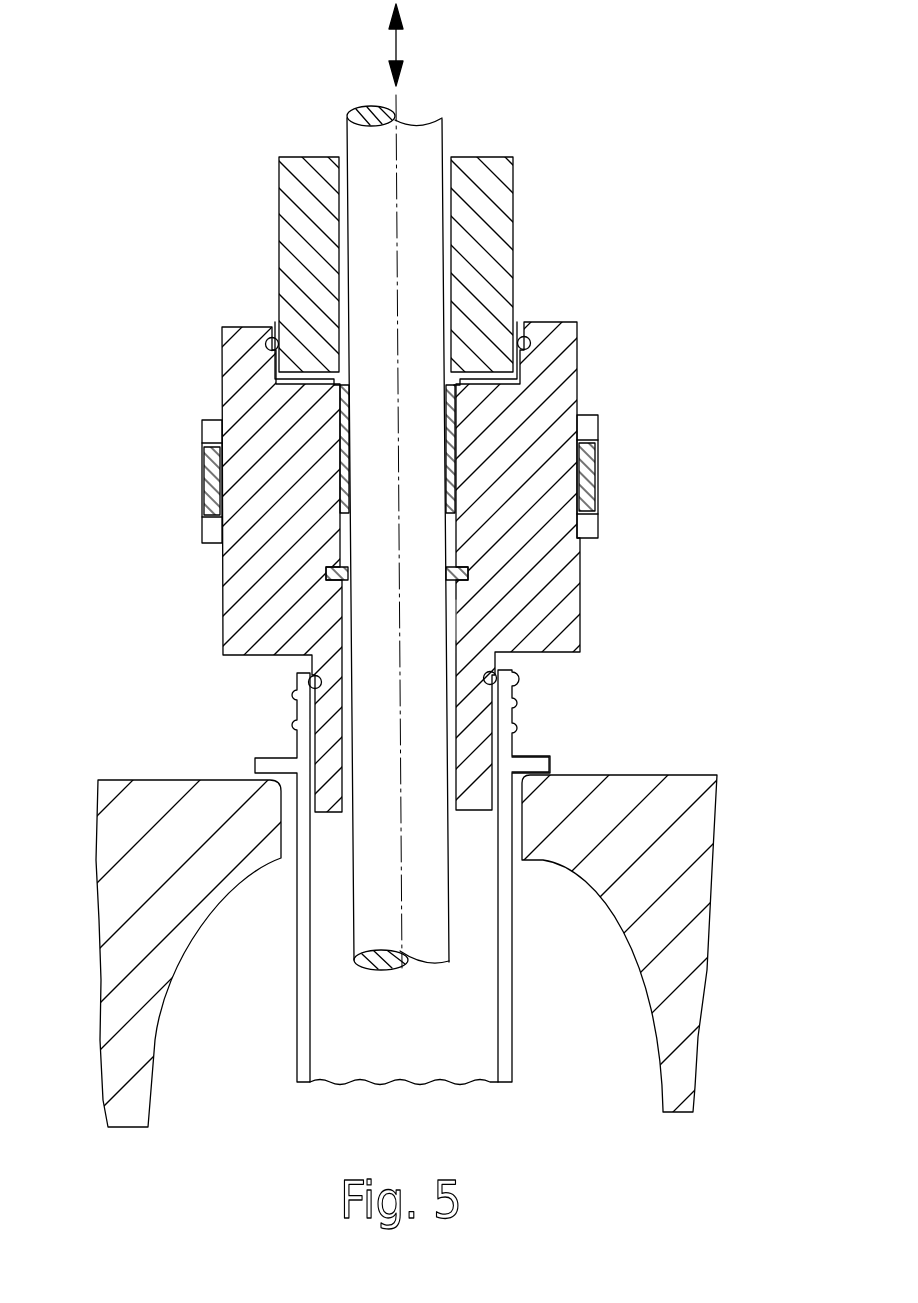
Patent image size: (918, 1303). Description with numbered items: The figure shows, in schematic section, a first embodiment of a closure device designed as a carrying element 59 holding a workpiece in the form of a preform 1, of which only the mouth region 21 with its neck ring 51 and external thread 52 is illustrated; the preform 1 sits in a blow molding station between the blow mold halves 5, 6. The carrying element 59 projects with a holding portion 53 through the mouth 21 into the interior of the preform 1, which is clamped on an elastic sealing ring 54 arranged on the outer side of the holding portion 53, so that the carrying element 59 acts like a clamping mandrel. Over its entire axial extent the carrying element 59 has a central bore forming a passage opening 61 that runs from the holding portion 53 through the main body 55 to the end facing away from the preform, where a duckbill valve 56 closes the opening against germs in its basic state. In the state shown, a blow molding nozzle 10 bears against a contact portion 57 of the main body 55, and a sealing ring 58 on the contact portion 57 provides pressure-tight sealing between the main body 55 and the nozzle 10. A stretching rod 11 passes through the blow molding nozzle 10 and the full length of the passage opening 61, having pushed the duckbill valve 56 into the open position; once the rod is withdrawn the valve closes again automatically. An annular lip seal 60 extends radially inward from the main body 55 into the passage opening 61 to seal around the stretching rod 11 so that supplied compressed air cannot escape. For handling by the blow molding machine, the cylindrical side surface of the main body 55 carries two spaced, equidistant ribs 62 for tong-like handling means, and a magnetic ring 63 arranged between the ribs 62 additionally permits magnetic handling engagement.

The preform 1 is at (510, 858).
The blow mold half 5 is at (132, 890).
The blow mold half 6 is at (687, 840).
The blow molding nozzle 10 is at (500, 225).
The stretching rod 11 is at (367, 263).
The mouth region 21 is at (371, 847).
The neck ring 51 is at (545, 757).
The external thread 52 is at (518, 676).
The holding portion 53 is at (298, 711).
The elastic sealing ring 54 is at (311, 676).
The main body 55 is at (252, 425).
The duckbill valve 56 is at (450, 422).
The contact portion 57 is at (459, 650).
The sealing ring 58 is at (266, 338).
The carrying element 59 is at (459, 650).
The annular lip seal 60 is at (337, 567).
The passage opening 61 is at (456, 630).
The ribs 62 is at (207, 428).
The magnetic ring 63 is at (594, 458).